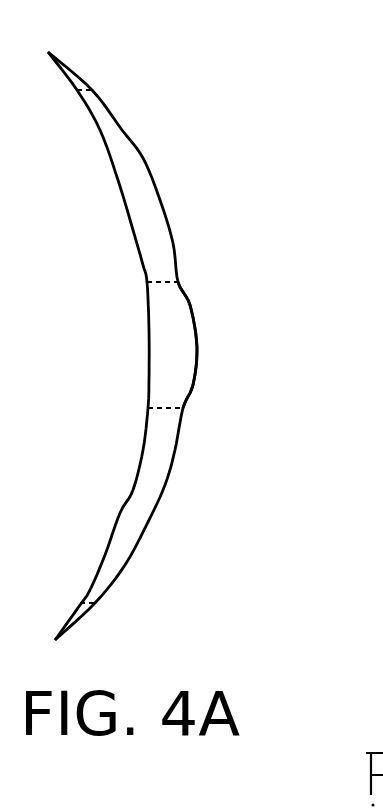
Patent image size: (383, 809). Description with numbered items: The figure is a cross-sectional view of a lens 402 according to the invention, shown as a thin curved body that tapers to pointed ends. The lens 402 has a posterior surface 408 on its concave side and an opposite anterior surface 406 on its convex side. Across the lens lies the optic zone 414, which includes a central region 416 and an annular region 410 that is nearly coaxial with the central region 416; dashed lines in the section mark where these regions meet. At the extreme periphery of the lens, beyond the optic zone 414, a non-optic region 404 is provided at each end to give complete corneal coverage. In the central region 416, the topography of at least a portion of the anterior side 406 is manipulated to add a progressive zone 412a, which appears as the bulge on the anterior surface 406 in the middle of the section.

The lens 402 is at (147, 157).
The non-optic region 404 is at (83, 80).
The anterior surface 406 is at (150, 522).
The posterior surface 408 is at (120, 513).
The annular region 410 is at (174, 243).
The progressive zone 412a is at (233, 324).
The optic zone 414 is at (140, 431).
The central region 416 is at (147, 330).